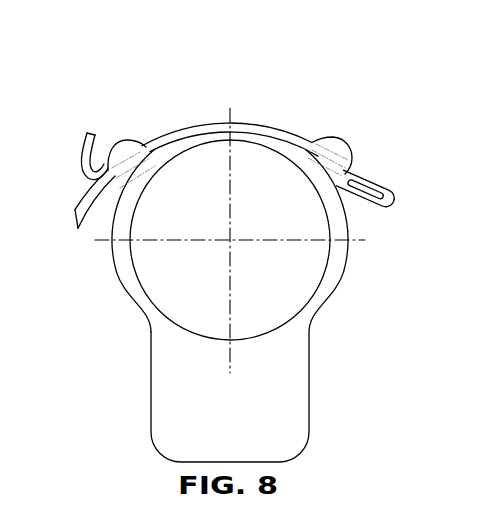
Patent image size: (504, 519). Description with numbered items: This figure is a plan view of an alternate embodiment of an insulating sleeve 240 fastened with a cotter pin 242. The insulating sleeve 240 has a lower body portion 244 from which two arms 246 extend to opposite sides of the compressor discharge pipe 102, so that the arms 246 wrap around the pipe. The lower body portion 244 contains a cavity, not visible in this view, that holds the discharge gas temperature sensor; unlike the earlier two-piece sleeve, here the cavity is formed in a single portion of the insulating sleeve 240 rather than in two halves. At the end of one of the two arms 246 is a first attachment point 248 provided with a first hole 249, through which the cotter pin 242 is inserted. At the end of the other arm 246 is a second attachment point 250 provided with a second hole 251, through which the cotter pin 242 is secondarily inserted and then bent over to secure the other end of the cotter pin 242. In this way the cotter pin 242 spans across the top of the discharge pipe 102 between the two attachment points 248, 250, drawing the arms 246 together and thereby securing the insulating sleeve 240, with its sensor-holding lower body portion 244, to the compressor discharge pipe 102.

The compressor discharge pipe 102 is at (328, 280).
The insulating sleeve 240 is at (309, 402).
The cotter pin 242 is at (248, 122).
The lower body portion 244 is at (151, 394).
The arms 246 is at (117, 273).
The first attachment point 248 is at (320, 141).
The first hole 249 is at (305, 163).
The second attachment point 250 is at (147, 141).
The second hole 251 is at (163, 168).